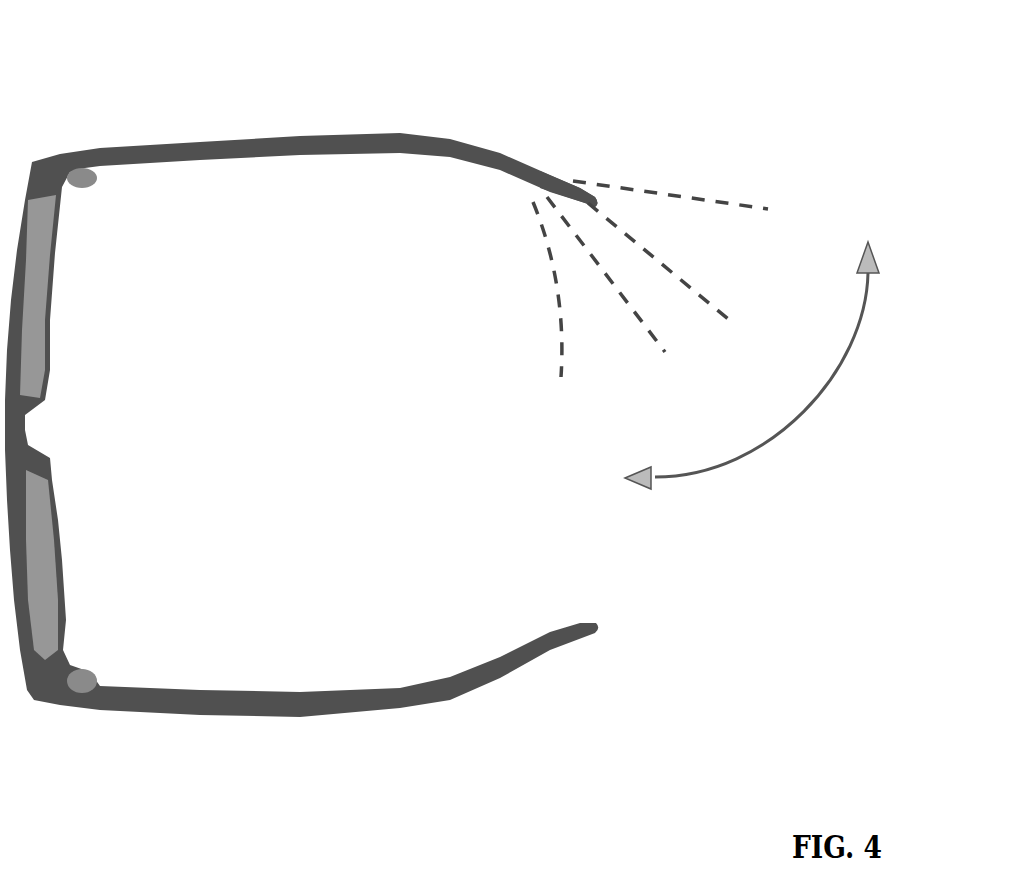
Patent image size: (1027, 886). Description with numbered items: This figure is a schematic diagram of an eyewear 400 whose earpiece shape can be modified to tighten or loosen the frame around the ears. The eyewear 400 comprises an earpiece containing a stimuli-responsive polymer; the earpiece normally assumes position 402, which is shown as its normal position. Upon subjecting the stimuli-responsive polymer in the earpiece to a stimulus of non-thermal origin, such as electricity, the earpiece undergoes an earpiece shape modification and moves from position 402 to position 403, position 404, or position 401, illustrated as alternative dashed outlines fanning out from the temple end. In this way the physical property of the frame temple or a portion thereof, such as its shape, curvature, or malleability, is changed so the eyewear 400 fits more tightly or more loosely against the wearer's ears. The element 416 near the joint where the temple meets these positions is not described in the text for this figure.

The eyewear 400 is at (522, 88).
The hinge 416 is at (507, 163).
The position 401 is at (699, 199).
The position 402 is at (688, 270).
The position 403 is at (627, 292).
The position 404 is at (549, 312).